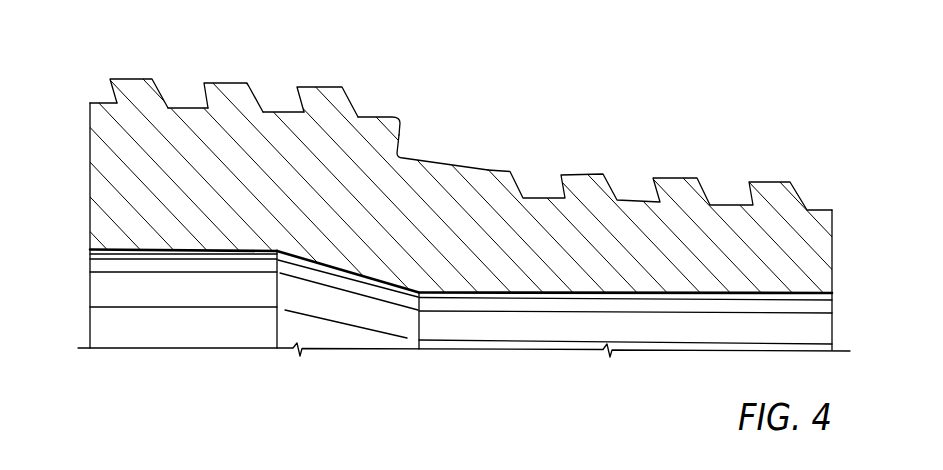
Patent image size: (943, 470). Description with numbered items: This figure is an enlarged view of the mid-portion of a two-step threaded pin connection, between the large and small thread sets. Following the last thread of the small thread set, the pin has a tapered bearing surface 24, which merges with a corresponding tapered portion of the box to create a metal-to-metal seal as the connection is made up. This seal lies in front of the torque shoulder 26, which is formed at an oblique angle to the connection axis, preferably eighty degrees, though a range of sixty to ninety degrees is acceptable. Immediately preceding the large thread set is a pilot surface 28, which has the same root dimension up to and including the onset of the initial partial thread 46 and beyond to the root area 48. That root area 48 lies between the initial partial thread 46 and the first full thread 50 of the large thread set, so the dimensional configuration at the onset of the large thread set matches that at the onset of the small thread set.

The bearing surface 24 is at (485, 170).
The torque shoulder 26 is at (402, 127).
The pilot surface 28 is at (383, 113).
The initial partial thread 46 is at (327, 93).
The root area 48 is at (277, 110).
The first full thread 50 is at (228, 93).